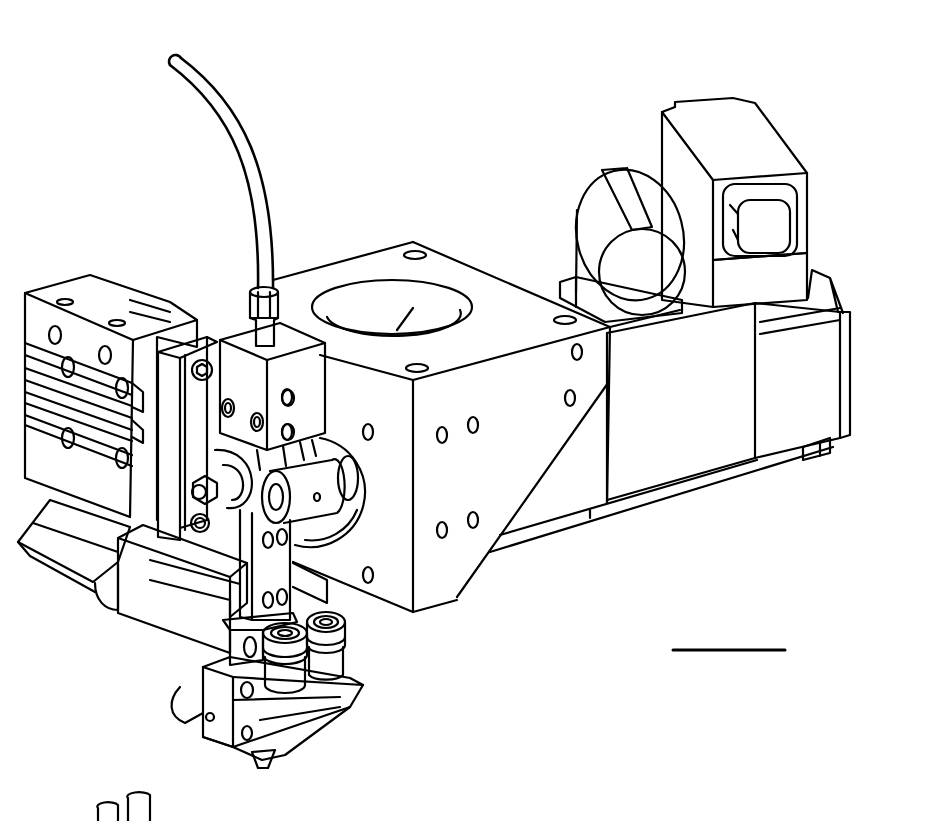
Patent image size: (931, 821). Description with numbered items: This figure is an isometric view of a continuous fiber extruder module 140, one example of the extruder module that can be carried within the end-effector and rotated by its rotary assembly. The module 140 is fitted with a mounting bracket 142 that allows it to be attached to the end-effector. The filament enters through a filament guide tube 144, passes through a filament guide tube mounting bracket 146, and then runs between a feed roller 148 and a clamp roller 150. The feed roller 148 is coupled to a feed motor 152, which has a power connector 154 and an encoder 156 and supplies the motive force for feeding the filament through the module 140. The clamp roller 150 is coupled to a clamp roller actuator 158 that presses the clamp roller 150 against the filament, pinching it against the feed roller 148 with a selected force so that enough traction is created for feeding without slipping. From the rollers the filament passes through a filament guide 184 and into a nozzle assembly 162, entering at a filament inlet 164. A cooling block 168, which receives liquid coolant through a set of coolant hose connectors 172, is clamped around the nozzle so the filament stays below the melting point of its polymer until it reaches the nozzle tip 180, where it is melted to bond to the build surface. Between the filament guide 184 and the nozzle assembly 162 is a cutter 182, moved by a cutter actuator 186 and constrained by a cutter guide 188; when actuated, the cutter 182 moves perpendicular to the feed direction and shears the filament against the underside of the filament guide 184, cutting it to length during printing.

The continuous fiber extruder module 140 is at (413, 128).
The mounting bracket 142 is at (518, 448).
The filament guide tube 144 is at (235, 147).
The filament guide tube mounting bracket 146 is at (240, 380).
The feed roller 148 is at (307, 497).
The clamp roller 150 is at (222, 450).
The feed motor 152 is at (800, 390).
The power connector 154 is at (595, 205).
The encoder 156 is at (758, 138).
The clamp roller actuator 158 is at (60, 470).
The nozzle assembly 162 is at (352, 725).
The filament inlet 164 is at (537, 811).
The cooling block 168 is at (295, 707).
The coolant hose connectors 172 is at (335, 653).
The nozzle tip 180 is at (258, 760).
The cutter 182 is at (233, 622).
The filament guide 184 is at (333, 623).
The cutter actuator 186 is at (62, 548).
The cutter guide 188 is at (200, 617).